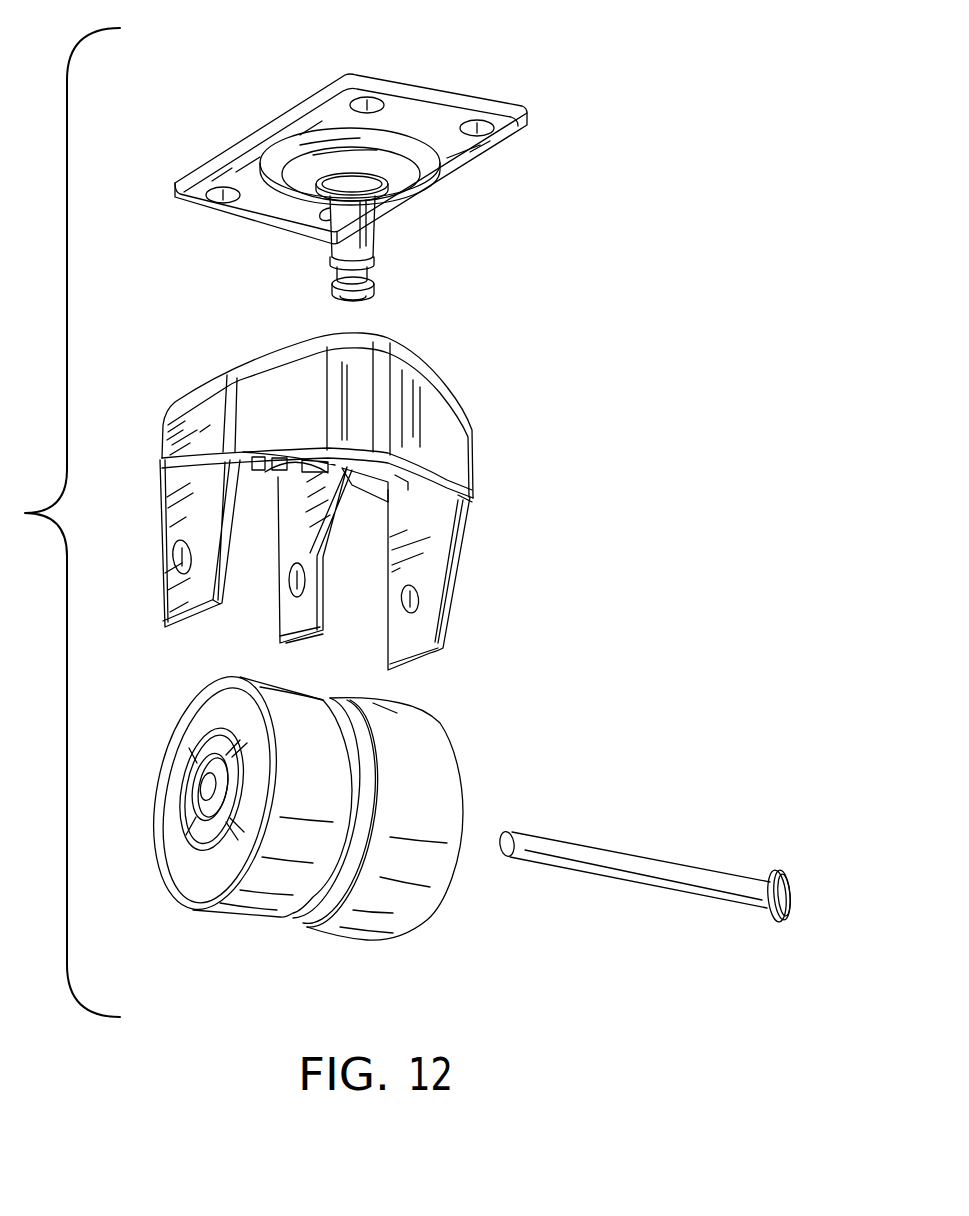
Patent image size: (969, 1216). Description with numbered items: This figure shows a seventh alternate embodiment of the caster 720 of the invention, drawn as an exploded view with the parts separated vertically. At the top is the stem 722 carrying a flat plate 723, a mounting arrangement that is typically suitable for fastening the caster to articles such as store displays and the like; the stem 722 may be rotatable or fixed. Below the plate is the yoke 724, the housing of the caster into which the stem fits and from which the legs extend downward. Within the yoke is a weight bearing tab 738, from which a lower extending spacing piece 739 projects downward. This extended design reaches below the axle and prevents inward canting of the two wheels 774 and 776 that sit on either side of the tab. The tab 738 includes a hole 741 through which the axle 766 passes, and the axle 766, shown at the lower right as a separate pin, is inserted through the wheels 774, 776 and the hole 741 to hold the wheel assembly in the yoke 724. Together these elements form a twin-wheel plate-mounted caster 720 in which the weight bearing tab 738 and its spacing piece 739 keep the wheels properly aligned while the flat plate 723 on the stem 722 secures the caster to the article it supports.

The caster 720 is at (397, 482).
The stem 722 is at (386, 154).
The flat plate 723 is at (443, 88).
The yoke 724 is at (277, 403).
The weight bearing tab 738 is at (298, 575).
The lower extending spacing piece 739 is at (292, 620).
The hole 741 is at (293, 583).
The axle 766 is at (630, 868).
The wheel 774 is at (260, 903).
The wheel 776 is at (427, 780).